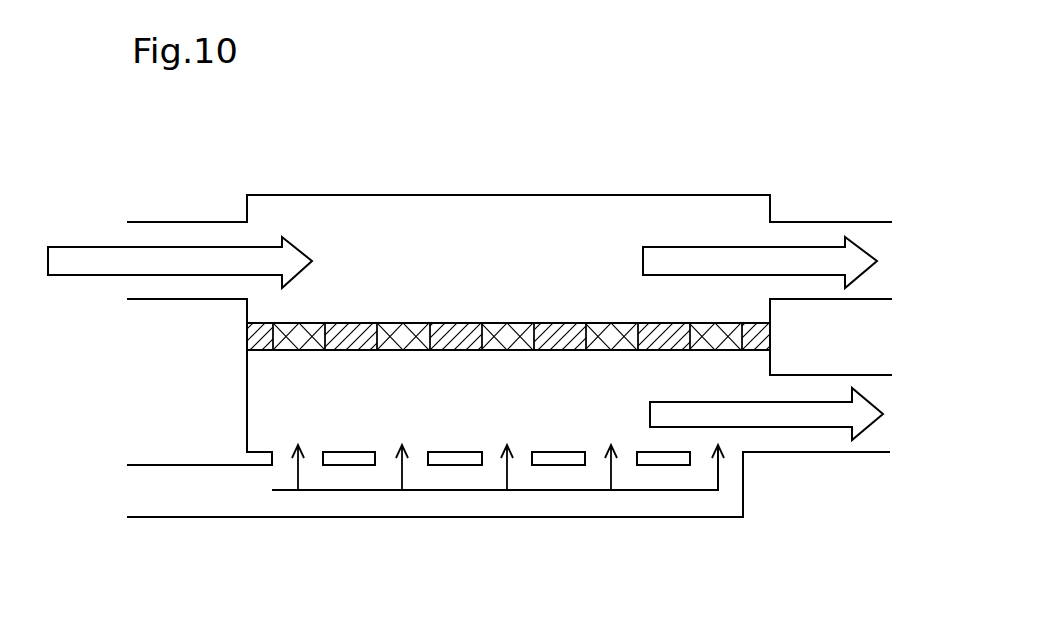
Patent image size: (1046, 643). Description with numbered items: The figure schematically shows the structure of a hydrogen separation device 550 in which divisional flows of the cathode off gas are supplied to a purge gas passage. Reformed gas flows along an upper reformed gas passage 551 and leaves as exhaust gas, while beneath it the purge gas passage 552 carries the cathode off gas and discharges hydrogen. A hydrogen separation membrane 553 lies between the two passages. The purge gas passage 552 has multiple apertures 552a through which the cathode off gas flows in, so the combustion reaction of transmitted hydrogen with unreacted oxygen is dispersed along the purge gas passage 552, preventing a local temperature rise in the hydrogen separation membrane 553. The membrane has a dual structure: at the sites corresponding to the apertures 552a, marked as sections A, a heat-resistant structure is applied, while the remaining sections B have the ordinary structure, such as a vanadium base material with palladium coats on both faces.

The hydrogen separation device 550 is at (721, 124).
The reformed gas passage 551 is at (442, 247).
The purge gas passage 552 is at (592, 415).
The apertures 552a is at (421, 470).
The hydrogen separation membrane 553 is at (570, 319).
The section A is at (301, 323).
The section B is at (456, 323).